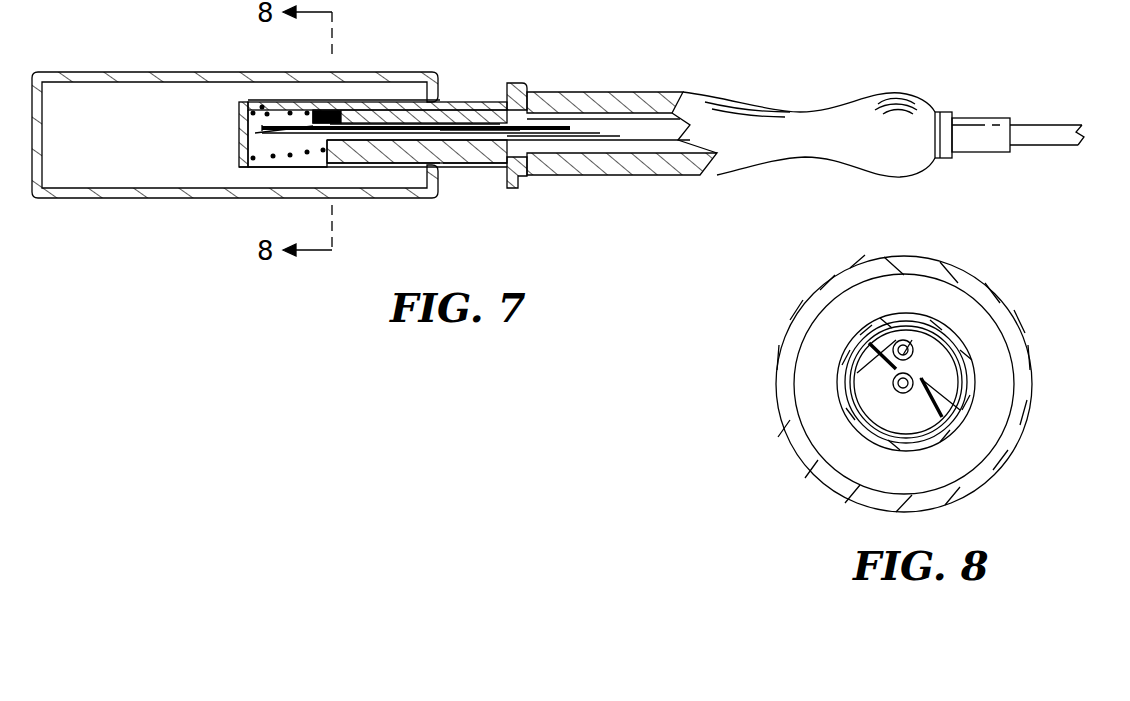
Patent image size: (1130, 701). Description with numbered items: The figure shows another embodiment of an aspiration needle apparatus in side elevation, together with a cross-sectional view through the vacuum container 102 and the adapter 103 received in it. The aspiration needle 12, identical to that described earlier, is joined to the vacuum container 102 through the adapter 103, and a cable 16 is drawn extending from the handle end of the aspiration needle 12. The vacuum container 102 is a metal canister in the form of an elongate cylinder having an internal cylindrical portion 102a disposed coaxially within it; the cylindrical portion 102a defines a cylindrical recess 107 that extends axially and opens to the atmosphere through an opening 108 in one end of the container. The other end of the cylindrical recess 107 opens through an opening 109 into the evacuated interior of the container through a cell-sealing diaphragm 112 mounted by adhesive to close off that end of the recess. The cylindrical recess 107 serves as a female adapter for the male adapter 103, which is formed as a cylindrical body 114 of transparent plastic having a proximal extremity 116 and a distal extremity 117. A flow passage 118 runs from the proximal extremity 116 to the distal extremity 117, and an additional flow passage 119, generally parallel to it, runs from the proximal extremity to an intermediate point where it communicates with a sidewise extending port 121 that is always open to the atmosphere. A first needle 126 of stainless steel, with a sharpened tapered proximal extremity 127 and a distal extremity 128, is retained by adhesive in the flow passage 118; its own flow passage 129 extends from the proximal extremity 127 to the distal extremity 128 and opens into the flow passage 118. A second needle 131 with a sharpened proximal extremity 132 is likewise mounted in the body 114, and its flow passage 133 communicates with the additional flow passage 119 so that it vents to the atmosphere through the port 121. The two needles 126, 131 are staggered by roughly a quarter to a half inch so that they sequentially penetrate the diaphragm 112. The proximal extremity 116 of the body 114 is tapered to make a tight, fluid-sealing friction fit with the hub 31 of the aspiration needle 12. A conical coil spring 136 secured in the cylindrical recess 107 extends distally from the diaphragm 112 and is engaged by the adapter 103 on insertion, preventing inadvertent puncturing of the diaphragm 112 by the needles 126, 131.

In FIG. 7, the aspiration needle 12 is at (778, 96).
In FIG. 7, the cable 16 is at (1053, 130).
In FIG. 7, the hub 31 is at (517, 182).
In FIG. 7, the vacuum container 102 is at (148, 66).
In FIG. 8, the vacuum container 102 is at (858, 268).
In FIG. 7, the internal cylindrical portion 102a is at (345, 117).
In FIG. 8, the internal cylindrical portion 102a is at (967, 382).
In FIG. 7, the adapter 103 is at (464, 166).
In FIG. 7, the cylindrical recess 107 is at (293, 160).
In FIG. 7, the opening 108 is at (443, 108).
In FIG. 7, the opening 109 is at (240, 160).
In FIG. 7, the diaphragm 112 is at (239, 113).
In FIG. 7, the cylindrical body 114 is at (530, 152).
In FIG. 8, the cylindrical body 114 is at (857, 398).
In FIG. 7, the proximal extremity 116 is at (584, 132).
In FIG. 7, the distal extremity 117 is at (339, 170).
In FIG. 7, the flow passage 118 is at (503, 134).
In FIG. 7, the additional flow passage 119 is at (460, 126).
In FIG. 7, the port 121 is at (493, 130).
In FIG. 7, the first needle 126 is at (447, 160).
In FIG. 8, the first needle 126 is at (965, 392).
In FIG. 7, the sharpened tapered proximal extremity 127 is at (265, 131).
In FIG. 7, the distal extremity 128 is at (582, 116).
In FIG. 8, the flow passage 129 is at (903, 394).
In FIG. 7, the second needle 131 is at (347, 110).
In FIG. 8, the second needle 131 is at (912, 345).
In FIG. 7, the sharpened proximal extremity 132 is at (323, 110).
In FIG. 8, the flow passage 133 is at (908, 340).
In FIG. 7, the conical coil spring 136 is at (262, 104).